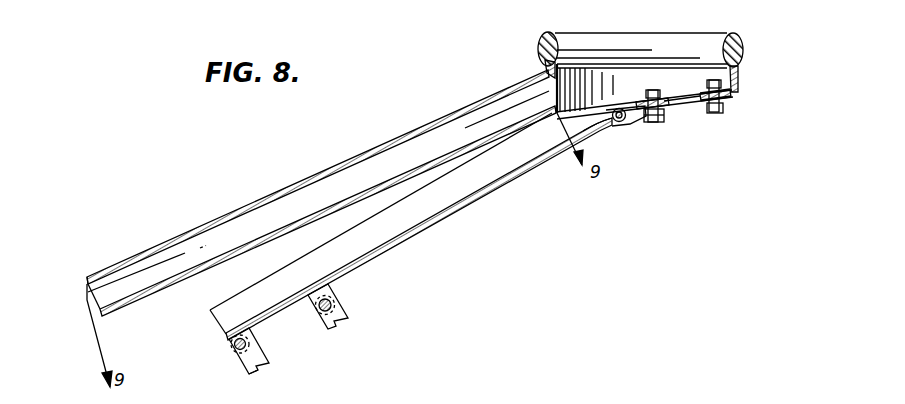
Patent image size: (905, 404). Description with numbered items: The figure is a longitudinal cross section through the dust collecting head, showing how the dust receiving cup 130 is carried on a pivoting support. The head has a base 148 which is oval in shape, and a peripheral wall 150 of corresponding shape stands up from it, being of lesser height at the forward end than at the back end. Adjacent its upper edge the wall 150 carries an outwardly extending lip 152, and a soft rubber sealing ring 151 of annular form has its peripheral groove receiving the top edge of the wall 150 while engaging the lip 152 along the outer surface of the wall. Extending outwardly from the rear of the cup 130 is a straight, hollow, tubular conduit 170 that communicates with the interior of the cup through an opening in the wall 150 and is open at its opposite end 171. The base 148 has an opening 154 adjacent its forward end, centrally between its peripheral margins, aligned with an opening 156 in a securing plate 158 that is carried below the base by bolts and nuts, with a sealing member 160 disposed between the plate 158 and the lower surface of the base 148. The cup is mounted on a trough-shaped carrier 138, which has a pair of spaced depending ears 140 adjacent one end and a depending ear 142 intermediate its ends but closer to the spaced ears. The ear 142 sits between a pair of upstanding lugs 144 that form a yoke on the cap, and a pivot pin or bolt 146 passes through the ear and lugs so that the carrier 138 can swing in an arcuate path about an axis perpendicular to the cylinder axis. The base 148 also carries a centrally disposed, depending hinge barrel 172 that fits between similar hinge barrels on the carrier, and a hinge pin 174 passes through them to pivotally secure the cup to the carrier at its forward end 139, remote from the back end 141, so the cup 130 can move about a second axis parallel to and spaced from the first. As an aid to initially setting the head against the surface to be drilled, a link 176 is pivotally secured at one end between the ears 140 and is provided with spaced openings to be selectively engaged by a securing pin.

The dust receiving cup 130 is at (732, 86).
The trough-shaped carrier 138 is at (430, 223).
The forward end of carrier 139 is at (600, 122).
The spaced depending ears 140 is at (232, 352).
The back end of carrier 141 is at (232, 337).
The depending ear 142 is at (333, 293).
The upstanding lugs 144 is at (315, 313).
The pivot pin or bolt 146 is at (338, 306).
The base 148 is at (636, 118).
The peripheral wall 150 is at (647, 72).
The soft rubber sealing ring 151 is at (545, 33).
The outwardly extending lip 152 is at (543, 64).
The opening in base 154 is at (678, 105).
The opening in securing plate 156 is at (670, 110).
The securing plate 158 is at (733, 102).
The sealing member 160 is at (728, 95).
The tubular conduit 170 is at (253, 203).
The open end of conduit 171 is at (93, 276).
The hinge barrel 172 is at (627, 124).
The hinge pin 174 is at (620, 122).
The link 176 is at (253, 364).